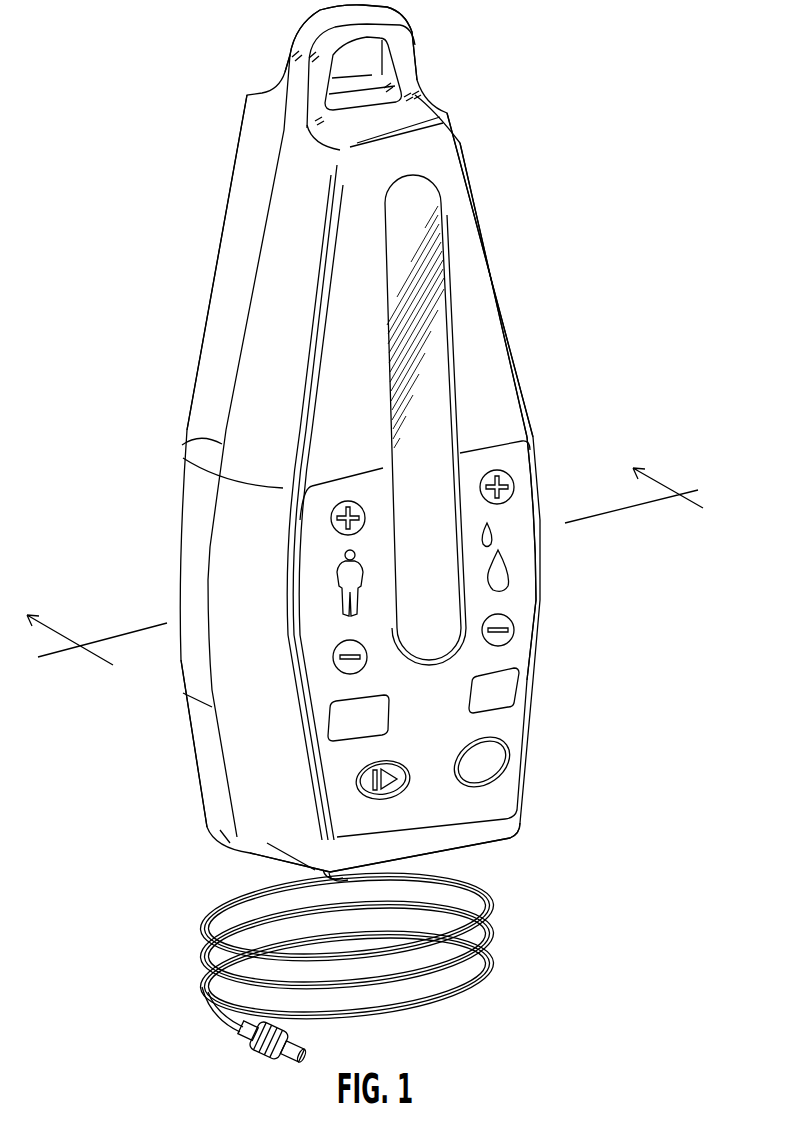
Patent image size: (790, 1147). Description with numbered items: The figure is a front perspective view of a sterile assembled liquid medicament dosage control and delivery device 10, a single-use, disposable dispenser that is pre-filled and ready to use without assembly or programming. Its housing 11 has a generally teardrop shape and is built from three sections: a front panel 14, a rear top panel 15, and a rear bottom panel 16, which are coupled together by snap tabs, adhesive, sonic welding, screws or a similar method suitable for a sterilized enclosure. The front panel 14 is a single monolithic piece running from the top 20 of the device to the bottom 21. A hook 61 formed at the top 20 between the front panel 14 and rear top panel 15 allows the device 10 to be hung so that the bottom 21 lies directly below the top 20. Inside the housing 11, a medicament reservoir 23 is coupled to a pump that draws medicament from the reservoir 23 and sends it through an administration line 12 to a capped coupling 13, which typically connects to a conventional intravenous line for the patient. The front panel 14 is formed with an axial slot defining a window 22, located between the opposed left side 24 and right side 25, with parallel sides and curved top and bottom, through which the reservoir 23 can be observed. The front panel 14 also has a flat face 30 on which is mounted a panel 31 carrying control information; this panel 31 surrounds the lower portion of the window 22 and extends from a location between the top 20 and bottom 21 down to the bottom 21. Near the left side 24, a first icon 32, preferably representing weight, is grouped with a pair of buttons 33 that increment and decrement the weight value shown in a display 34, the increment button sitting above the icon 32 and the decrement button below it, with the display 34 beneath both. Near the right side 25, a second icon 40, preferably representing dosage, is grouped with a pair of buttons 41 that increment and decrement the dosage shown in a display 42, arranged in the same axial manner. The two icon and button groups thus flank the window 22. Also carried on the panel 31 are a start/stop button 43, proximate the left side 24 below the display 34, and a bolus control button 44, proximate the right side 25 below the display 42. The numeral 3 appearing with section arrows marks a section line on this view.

The sterile assembled liquid medicament dosage control and delivery device 10 is at (657, 88).
The housing 11 is at (466, 153).
The administration line 12 is at (494, 947).
The capped coupling 13 is at (298, 1040).
The front panel 14 is at (478, 206).
The rear top panel 15 is at (215, 258).
The rear bottom panel 16 is at (190, 765).
The top 20 is at (410, 34).
The bottom 21 is at (515, 838).
The window 22 is at (433, 443).
The medicament reservoir 23 is at (428, 283).
The left side 24 is at (183, 446).
The right side 25 is at (520, 360).
The flat face 30 is at (467, 357).
The panel 31 is at (530, 640).
The first icon 32 is at (342, 592).
The pair of buttons 33 is at (378, 540).
The display 34 is at (330, 714).
The second icon 40 is at (492, 571).
The pair of buttons 41 is at (509, 500).
The display 42 is at (521, 683).
The start/stop button 43 is at (355, 778).
The bolus control button 44 is at (497, 782).
The hook 61 is at (391, 84).
The section line 3 is at (381, 576).